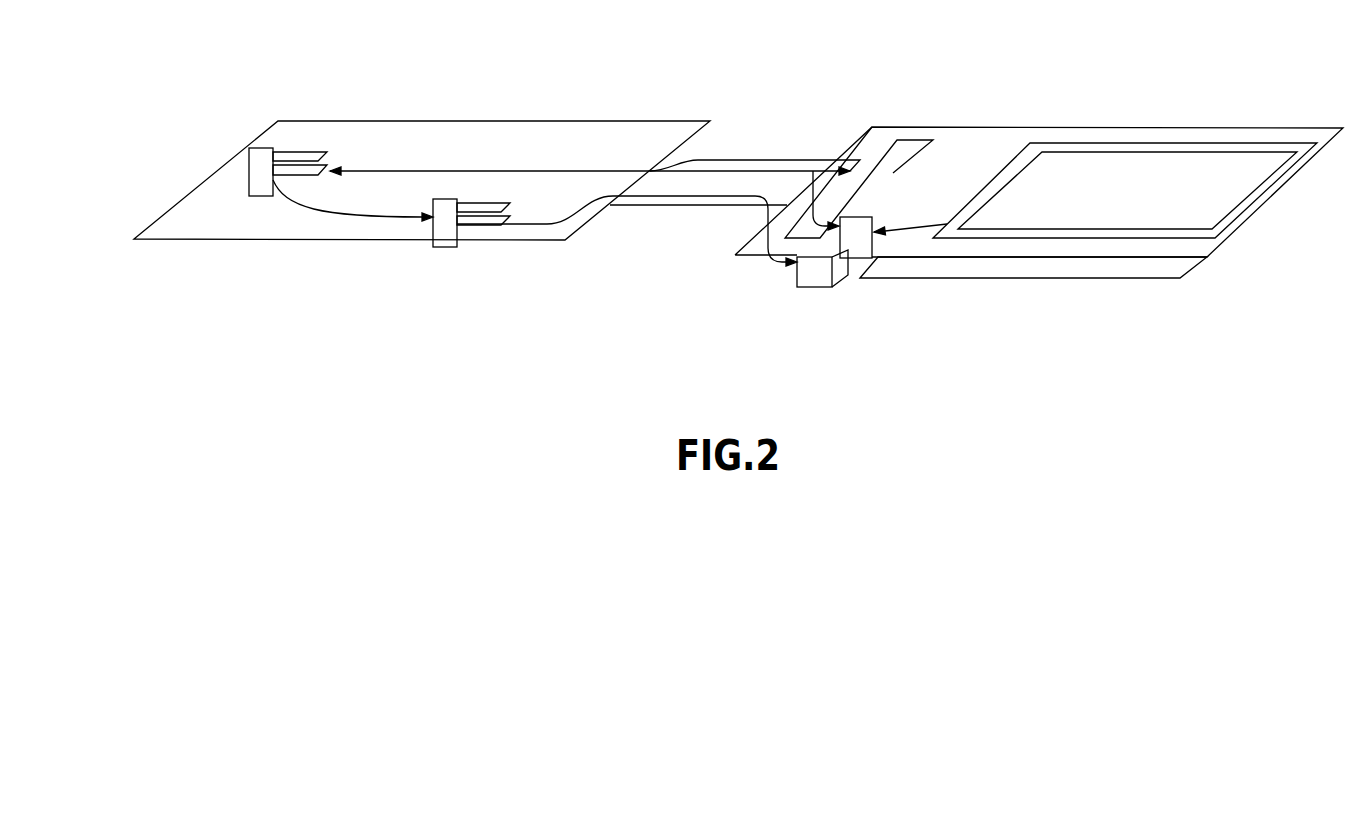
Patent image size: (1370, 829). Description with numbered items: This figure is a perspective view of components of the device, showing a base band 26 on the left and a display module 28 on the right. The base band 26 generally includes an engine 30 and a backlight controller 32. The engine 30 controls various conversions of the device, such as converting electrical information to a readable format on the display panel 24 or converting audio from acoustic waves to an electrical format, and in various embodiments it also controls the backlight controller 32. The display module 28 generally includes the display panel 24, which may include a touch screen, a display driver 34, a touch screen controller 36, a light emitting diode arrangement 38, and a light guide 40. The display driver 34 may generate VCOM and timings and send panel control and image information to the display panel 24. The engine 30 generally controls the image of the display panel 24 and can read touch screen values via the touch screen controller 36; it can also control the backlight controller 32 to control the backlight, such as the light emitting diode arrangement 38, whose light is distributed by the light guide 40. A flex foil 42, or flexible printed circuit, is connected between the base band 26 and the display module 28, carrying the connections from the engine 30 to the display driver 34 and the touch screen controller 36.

The display panel 24 is at (1181, 169).
The base band 26 is at (177, 229).
The display module 28 is at (1266, 94).
The engine 30 is at (290, 160).
The backlight controller 32 is at (480, 207).
The display driver 34 is at (895, 173).
The touch screen controller 36 is at (868, 252).
The light emitting diode (LED) arrangement 38 is at (817, 288).
The light guide 40 is at (1147, 279).
The flex foil 42 is at (643, 207).